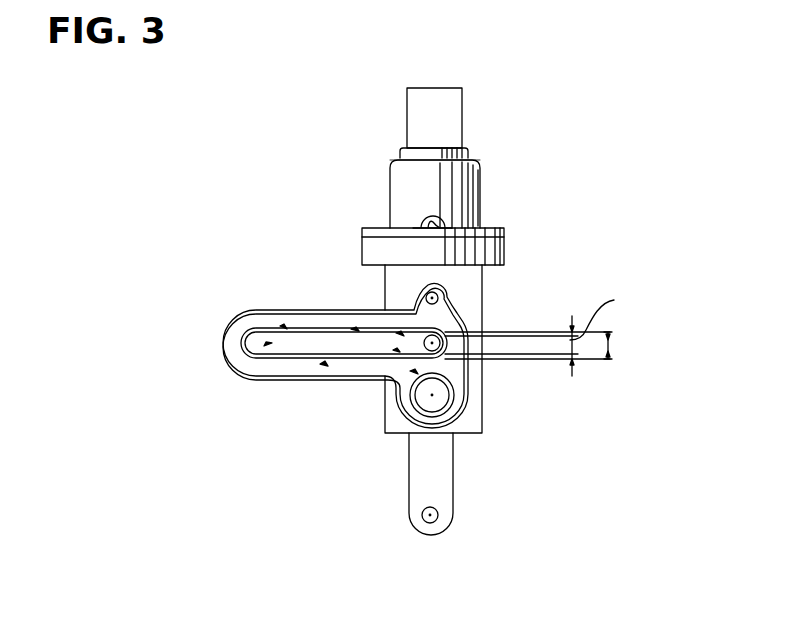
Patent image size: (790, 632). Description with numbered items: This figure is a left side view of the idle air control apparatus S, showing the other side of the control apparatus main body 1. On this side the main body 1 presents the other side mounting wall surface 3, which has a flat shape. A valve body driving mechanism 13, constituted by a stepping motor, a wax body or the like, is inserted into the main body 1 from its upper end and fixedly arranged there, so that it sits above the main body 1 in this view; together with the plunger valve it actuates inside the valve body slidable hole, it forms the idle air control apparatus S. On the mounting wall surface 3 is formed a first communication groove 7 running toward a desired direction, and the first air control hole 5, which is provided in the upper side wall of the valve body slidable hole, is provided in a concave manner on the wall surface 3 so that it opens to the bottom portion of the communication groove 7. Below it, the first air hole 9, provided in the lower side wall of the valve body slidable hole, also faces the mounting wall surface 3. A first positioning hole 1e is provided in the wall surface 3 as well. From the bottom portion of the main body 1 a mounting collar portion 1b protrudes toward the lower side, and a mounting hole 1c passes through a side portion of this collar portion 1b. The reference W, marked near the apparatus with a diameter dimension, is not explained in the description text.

The idle air control apparatus S is at (455, 138).
The valve body driving mechanism 13 is at (473, 159).
The control apparatus main body 1 is at (417, 437).
The mounting collar portion 1b is at (467, 521).
The mounting hole 1c is at (428, 527).
The first positioning hole 1e is at (420, 293).
The other side mounting wall surface 3 is at (381, 351).
The first air control hole 5 is at (403, 349).
The first communication groove 7 is at (297, 343).
The first air hole 9 is at (438, 401).
The wire W is at (612, 340).